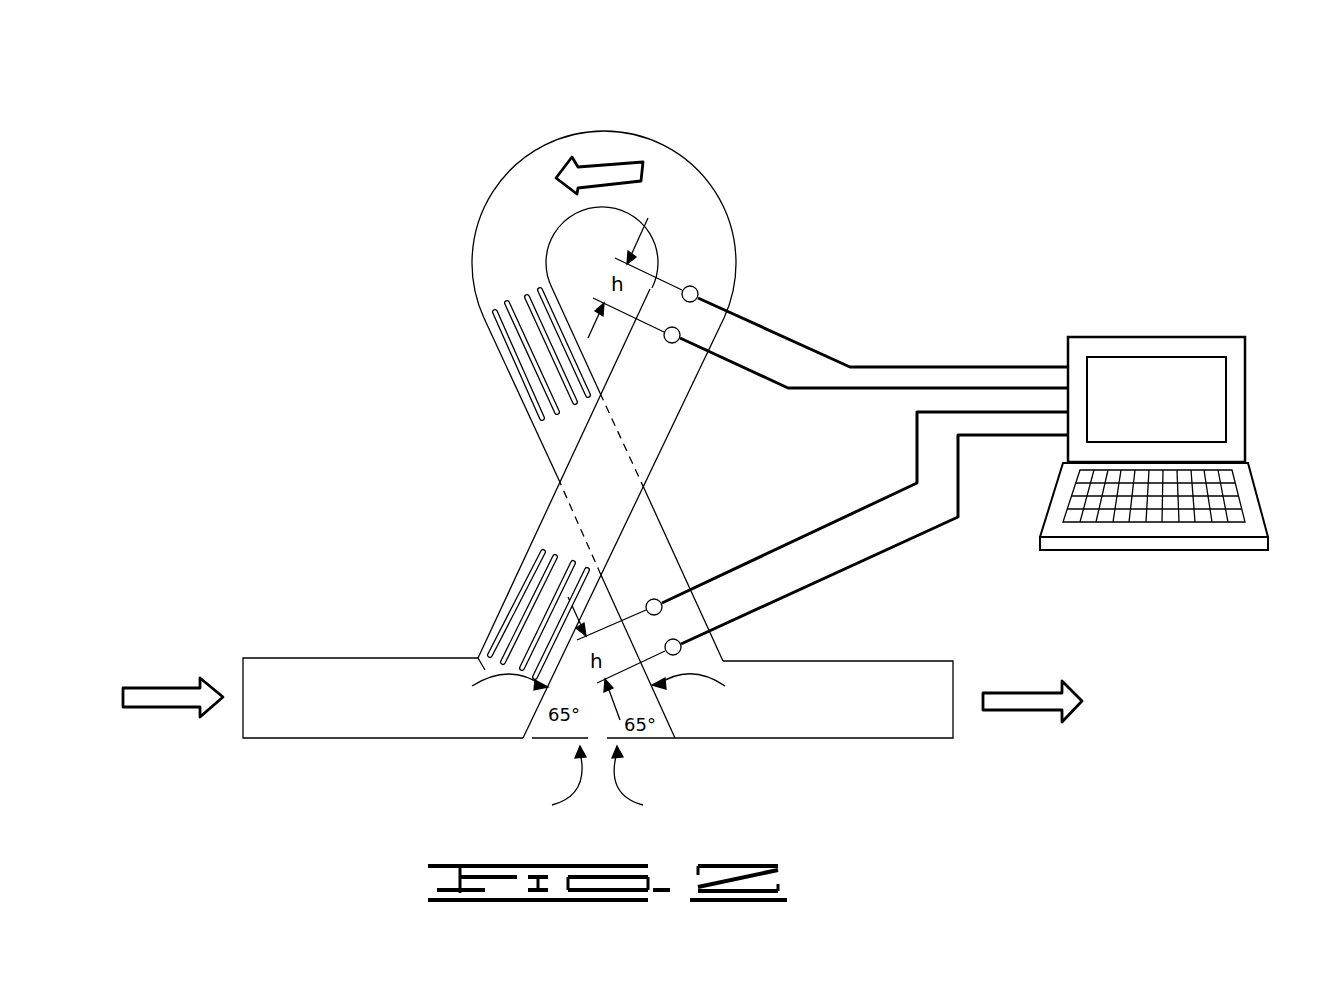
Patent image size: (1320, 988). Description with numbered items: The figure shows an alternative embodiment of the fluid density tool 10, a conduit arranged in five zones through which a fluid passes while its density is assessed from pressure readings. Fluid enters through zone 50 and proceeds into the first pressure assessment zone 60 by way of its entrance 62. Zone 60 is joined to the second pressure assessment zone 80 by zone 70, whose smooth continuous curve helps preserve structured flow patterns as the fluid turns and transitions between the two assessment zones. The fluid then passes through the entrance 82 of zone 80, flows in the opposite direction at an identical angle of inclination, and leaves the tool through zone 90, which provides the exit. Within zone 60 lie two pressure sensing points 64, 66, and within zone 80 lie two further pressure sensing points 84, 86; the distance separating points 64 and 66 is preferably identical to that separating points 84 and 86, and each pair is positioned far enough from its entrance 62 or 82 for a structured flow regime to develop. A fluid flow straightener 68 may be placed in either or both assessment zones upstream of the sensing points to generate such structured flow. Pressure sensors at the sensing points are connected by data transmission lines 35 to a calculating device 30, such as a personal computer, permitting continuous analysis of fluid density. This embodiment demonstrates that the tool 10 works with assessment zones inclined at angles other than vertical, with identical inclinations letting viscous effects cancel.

The fluid density tool 10 is at (810, 80).
The calculating device 30 is at (1217, 338).
The data transmission lines 35 is at (960, 367).
The zone 50 is at (305, 695).
The pressure assessment zone 60 is at (552, 493).
The entrance 62 is at (473, 650).
The pressure sensing point 64 is at (672, 343).
The pressure sensing point 66 is at (694, 286).
The fluid flow straightener 68 is at (515, 343).
The zone 70 is at (545, 165).
The pressure assessment zone 80 is at (647, 525).
The entrance 82 is at (498, 282).
The pressure sensing point 84 is at (655, 599).
The pressure sensing point 86 is at (681, 656).
The zone 90 is at (917, 700).